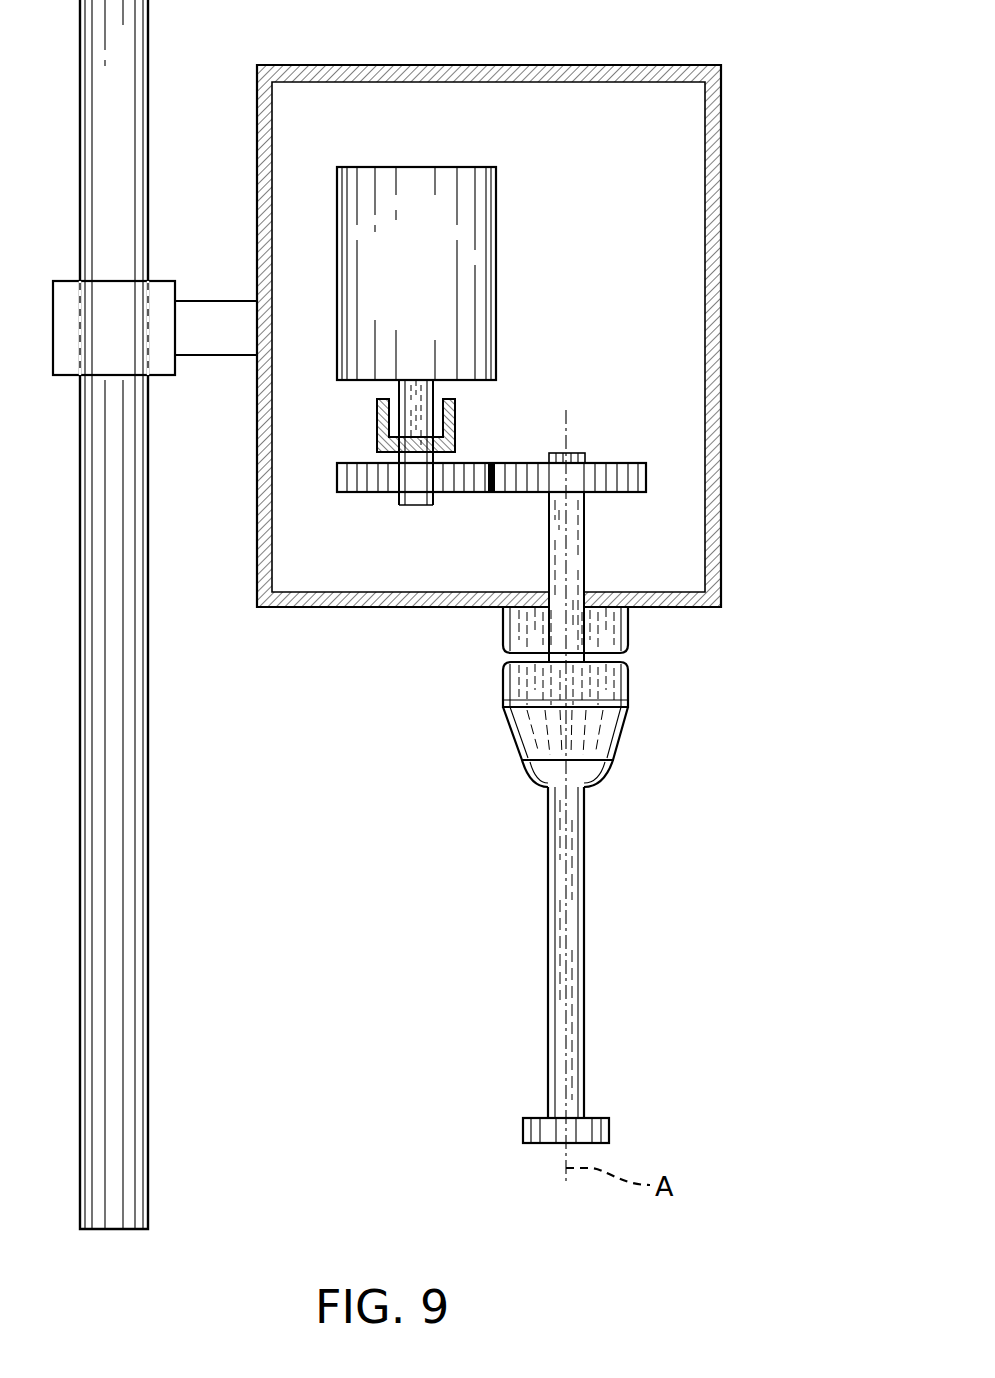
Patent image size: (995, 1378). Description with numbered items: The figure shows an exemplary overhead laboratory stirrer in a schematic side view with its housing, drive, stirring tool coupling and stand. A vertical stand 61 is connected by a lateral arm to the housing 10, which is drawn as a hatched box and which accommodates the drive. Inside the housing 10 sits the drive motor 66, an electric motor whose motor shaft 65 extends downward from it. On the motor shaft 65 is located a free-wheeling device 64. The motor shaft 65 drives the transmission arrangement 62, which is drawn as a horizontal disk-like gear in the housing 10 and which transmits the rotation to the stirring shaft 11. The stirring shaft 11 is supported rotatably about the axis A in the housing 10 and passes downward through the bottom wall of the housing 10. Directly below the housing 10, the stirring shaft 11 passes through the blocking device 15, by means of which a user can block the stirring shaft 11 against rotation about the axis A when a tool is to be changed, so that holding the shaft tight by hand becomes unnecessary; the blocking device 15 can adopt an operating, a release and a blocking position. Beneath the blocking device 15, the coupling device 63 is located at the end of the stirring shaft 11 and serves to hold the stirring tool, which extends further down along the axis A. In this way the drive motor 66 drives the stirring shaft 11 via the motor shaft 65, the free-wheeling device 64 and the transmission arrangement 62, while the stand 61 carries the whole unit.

The housing 10 is at (722, 155).
The stirring shaft 11 is at (576, 538).
The blocking device 15 is at (633, 623).
The stand 61 is at (120, 762).
The transmission arrangement 62 is at (481, 508).
The coupling device 63 is at (597, 718).
The free-wheeling device 64 is at (437, 418).
The motor shaft 65 is at (417, 388).
The drive motor 66 is at (466, 199).